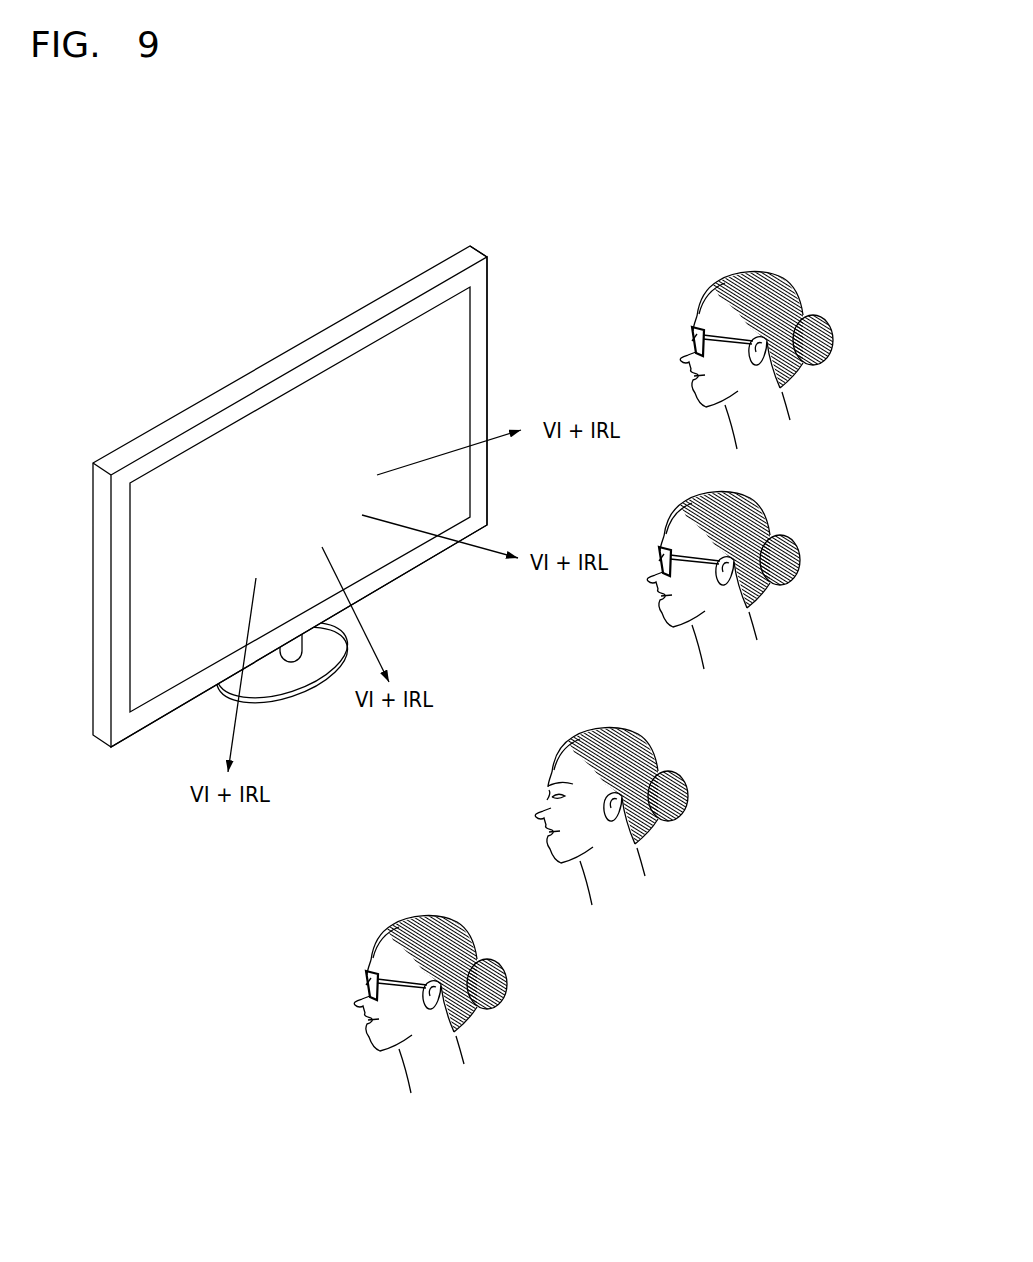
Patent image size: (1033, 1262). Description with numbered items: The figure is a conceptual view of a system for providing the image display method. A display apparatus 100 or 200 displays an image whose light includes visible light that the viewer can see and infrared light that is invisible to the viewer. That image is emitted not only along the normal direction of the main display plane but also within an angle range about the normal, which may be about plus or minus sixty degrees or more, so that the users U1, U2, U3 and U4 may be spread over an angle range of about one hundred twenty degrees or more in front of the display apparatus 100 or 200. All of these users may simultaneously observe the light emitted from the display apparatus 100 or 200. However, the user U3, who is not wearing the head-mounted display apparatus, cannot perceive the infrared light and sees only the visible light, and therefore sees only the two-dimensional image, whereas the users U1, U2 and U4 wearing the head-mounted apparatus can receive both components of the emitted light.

The display apparatus 100 is at (263, 332).
The display apparatus 200 is at (290, 496).
The user U1 is at (805, 288).
The user U2 is at (773, 503).
The user U3 is at (663, 742).
The user U4 is at (457, 907).